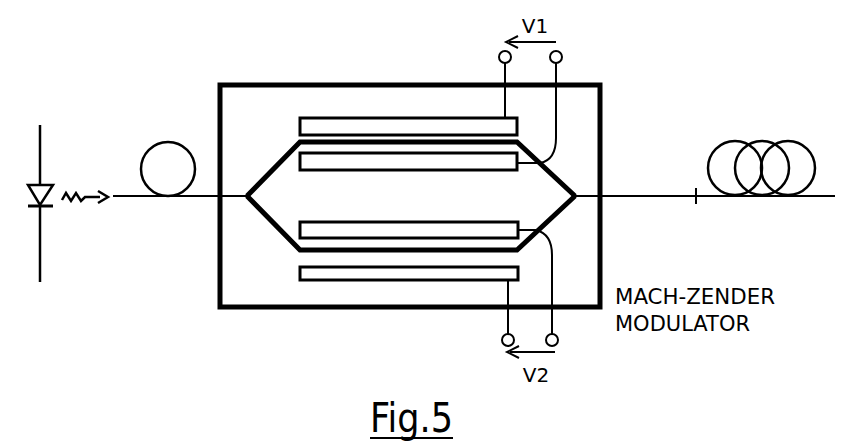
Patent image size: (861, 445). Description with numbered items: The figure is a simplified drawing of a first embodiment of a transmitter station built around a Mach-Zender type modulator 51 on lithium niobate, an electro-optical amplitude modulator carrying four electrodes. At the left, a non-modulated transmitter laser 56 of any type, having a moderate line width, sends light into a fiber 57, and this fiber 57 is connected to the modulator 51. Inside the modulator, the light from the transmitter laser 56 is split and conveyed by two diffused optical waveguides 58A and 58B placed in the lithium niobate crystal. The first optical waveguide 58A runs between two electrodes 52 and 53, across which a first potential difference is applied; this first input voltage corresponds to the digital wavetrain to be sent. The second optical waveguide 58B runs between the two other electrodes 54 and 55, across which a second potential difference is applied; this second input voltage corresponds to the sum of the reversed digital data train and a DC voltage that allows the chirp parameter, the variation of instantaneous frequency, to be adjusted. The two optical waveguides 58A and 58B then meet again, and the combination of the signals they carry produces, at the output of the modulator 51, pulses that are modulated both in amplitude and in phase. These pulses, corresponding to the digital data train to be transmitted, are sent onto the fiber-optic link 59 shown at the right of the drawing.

The Mach-Zender type modulator 51 is at (244, 105).
The electrode 52 is at (373, 117).
The electrode 53 is at (428, 152).
The electrode 54 is at (342, 242).
The electrode 55 is at (395, 287).
The transmitter laser 56 is at (43, 210).
The fiber 57 is at (190, 200).
The first optical waveguide 58A is at (290, 143).
The second optical waveguide 58B is at (277, 232).
The fiber-optic link 59 is at (808, 197).